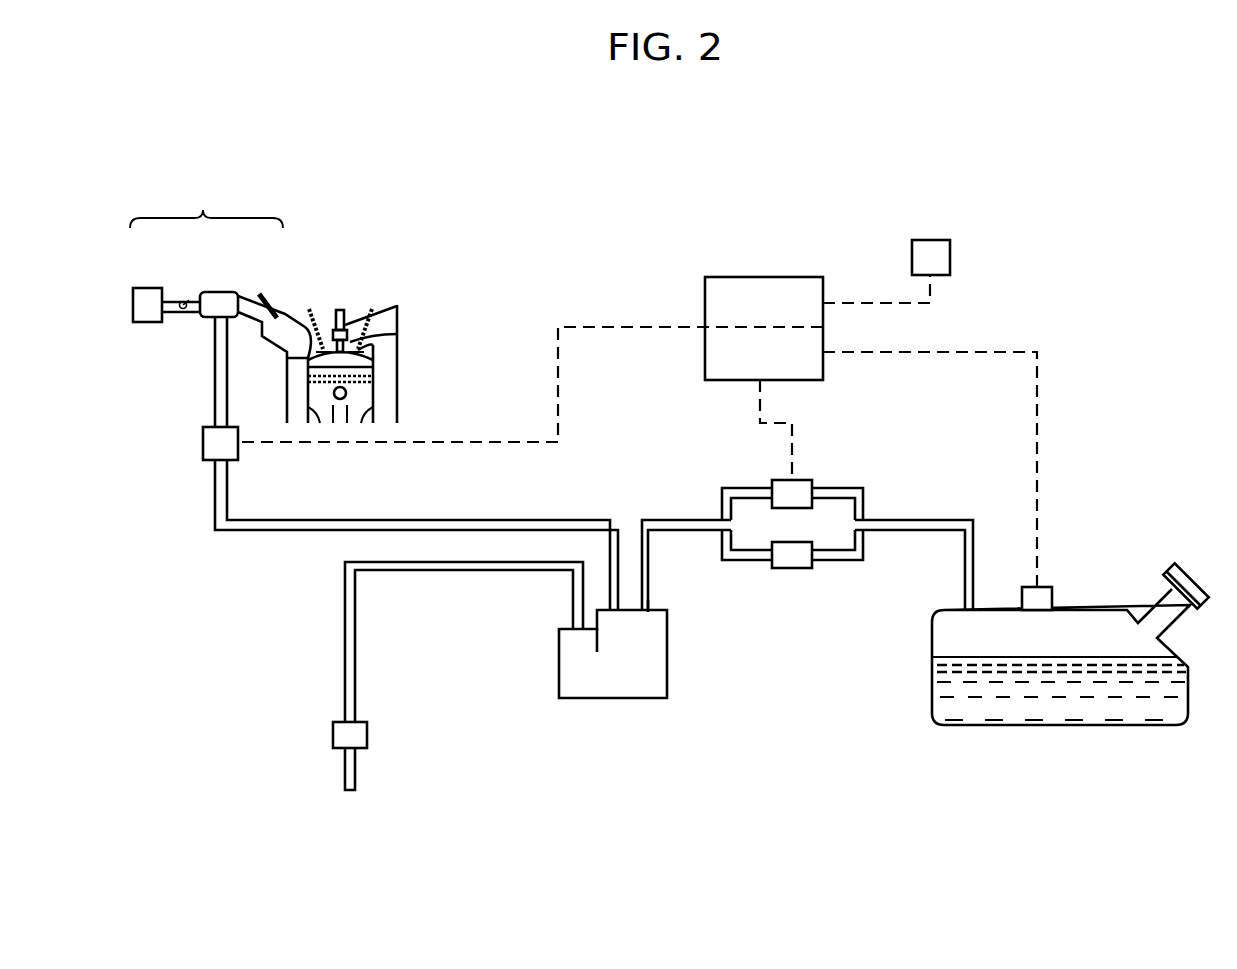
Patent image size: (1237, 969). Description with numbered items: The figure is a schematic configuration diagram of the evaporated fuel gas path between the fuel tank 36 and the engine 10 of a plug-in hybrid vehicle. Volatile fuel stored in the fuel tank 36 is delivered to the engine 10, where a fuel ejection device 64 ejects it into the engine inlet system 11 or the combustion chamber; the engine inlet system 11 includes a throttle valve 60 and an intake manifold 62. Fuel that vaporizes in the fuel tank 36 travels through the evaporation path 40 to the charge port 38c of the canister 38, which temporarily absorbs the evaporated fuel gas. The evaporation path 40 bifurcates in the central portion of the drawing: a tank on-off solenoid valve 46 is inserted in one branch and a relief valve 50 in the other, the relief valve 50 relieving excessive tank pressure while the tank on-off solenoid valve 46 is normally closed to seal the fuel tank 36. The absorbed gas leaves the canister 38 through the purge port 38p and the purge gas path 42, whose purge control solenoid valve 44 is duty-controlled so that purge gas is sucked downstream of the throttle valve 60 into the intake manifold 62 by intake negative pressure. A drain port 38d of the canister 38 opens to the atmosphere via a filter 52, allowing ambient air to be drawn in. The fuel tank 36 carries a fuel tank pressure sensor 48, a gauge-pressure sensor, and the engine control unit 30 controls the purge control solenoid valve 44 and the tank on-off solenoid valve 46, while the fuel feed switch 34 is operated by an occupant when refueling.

The engine 10 is at (410, 312).
The engine inlet system 11 is at (206, 204).
The engine control unit 30 is at (772, 277).
The fuel feed switch 34 is at (932, 240).
The fuel tank 36 is at (1116, 610).
The canister 38 is at (615, 698).
The purge port 38p is at (624, 610).
The charge port 38c is at (654, 610).
The drain port 38d is at (574, 629).
The evaporation path 40 is at (918, 520).
The purge gas path 42 is at (450, 520).
The purge control solenoid valve 44 is at (203, 446).
The tank on-off solenoid valve 46 is at (806, 480).
The fuel tank pressure sensor 48 is at (1040, 587).
The relief valve 50 is at (788, 568).
The filter 52 is at (367, 736).
The throttle valve 60 is at (187, 312).
The intake manifold 62 is at (222, 292).
The fuel ejection device 64 is at (262, 295).